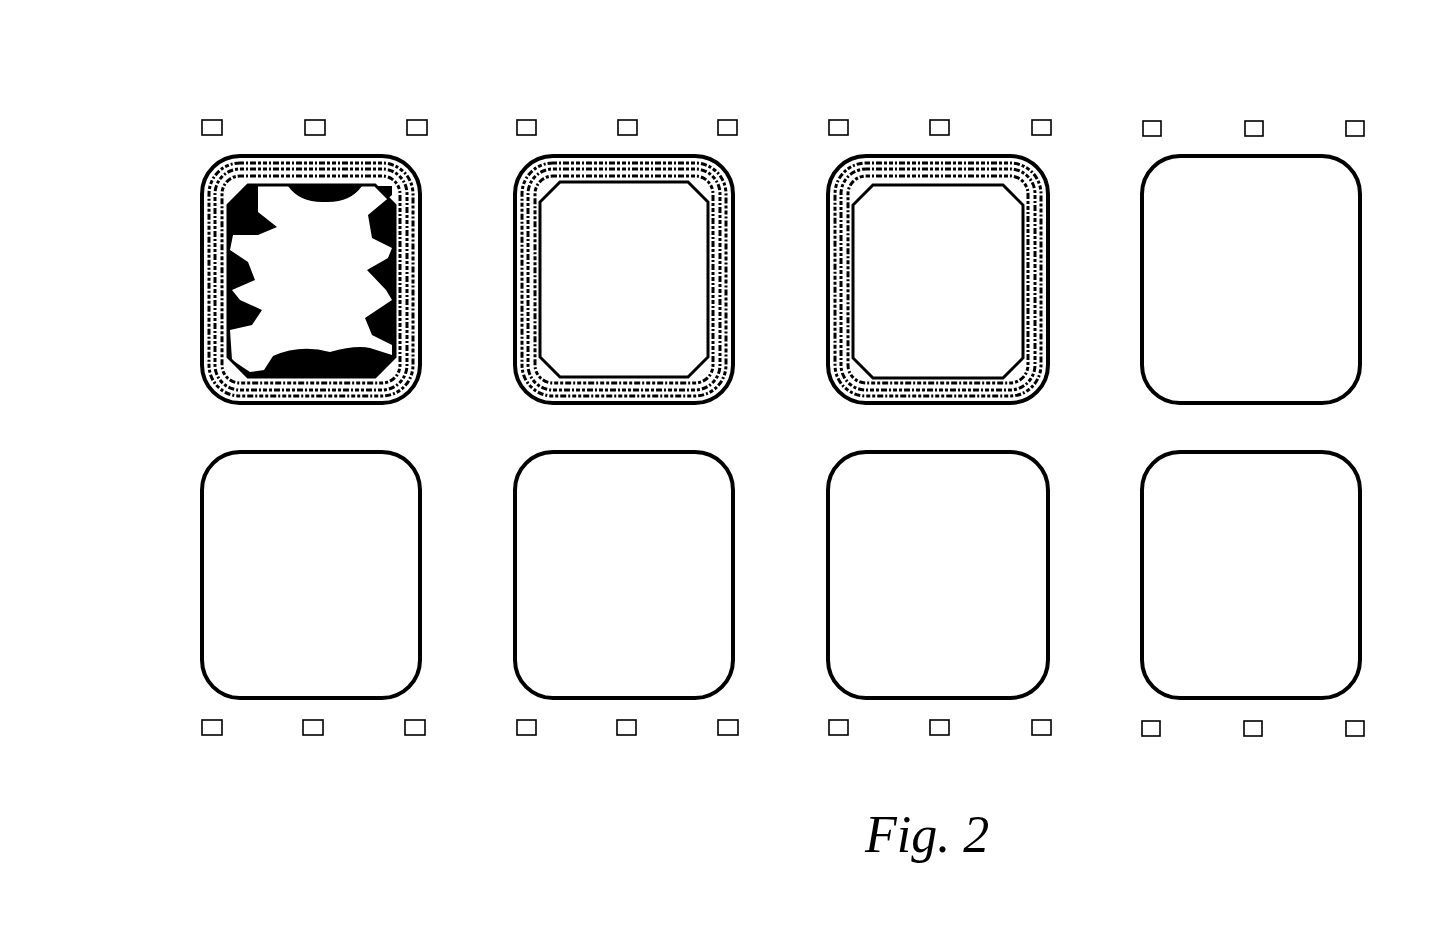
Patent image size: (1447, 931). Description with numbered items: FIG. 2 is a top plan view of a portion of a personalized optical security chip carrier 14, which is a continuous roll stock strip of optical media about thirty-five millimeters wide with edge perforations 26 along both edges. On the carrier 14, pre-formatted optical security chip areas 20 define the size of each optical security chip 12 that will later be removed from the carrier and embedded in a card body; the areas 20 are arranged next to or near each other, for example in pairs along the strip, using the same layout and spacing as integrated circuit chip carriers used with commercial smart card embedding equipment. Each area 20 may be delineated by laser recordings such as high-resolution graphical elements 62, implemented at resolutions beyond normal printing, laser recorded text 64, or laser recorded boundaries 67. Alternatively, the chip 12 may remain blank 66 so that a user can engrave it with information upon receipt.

The optical security chip 12 is at (175, 141).
The optical security chip carrier 14 is at (788, 58).
The optical security chip area 20 is at (172, 238).
The edge perforations 26 is at (210, 118).
The high-resolution graphical elements 62 is at (228, 350).
The laser recorded text 64 is at (412, 190).
The blank chip 66 is at (1254, 208).
The laser recorded boundaries 67 is at (1360, 575).